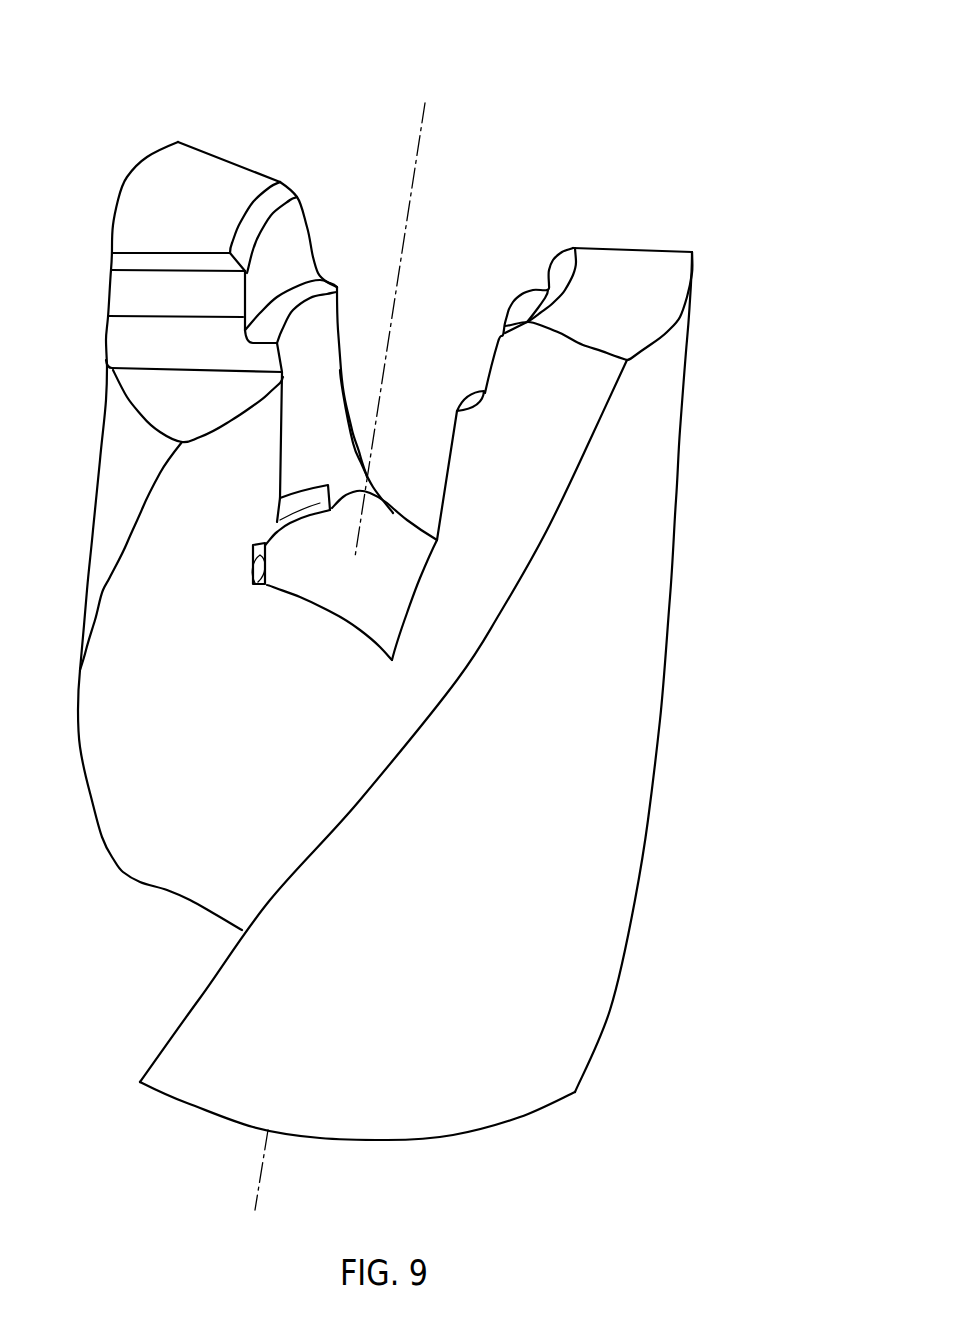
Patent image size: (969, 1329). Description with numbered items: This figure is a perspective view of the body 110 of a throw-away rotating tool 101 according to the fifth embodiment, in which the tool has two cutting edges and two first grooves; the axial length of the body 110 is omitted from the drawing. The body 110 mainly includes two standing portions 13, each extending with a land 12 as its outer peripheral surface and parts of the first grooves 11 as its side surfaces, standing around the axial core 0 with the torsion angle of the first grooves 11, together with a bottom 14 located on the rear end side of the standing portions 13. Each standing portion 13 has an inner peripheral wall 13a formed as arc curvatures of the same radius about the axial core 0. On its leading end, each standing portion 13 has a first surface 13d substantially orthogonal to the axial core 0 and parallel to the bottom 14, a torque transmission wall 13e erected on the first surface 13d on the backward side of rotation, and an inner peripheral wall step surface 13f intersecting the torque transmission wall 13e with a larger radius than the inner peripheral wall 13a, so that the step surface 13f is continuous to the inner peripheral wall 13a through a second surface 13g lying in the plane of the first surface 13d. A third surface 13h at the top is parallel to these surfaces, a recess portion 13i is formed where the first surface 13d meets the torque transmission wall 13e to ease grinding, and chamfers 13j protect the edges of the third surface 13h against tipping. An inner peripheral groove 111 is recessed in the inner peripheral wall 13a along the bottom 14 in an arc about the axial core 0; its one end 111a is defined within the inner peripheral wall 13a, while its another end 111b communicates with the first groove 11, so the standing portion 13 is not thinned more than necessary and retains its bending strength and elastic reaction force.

The body 110 is at (456, 608).
The throw-away rotating tool 101 is at (395, 656).
The first groove 11 is at (125, 823).
The land 12 is at (103, 468).
The standing portion 13 is at (151, 162).
The inner peripheral wall 13a is at (333, 385).
The first surface 13d is at (198, 415).
The torque transmission wall 13e is at (113, 293).
The inner peripheral wall step surface 13f is at (291, 232).
The second surface 13g is at (320, 288).
The third surface 13h is at (217, 160).
The recess portion 13i is at (107, 367).
The chamfer 13j is at (280, 197).
The bottom 14 is at (335, 592).
The inner peripheral groove 111 is at (297, 517).
The one end 111a is at (342, 485).
The another end 111b is at (254, 585).
The axial core 0 is at (421, 115).